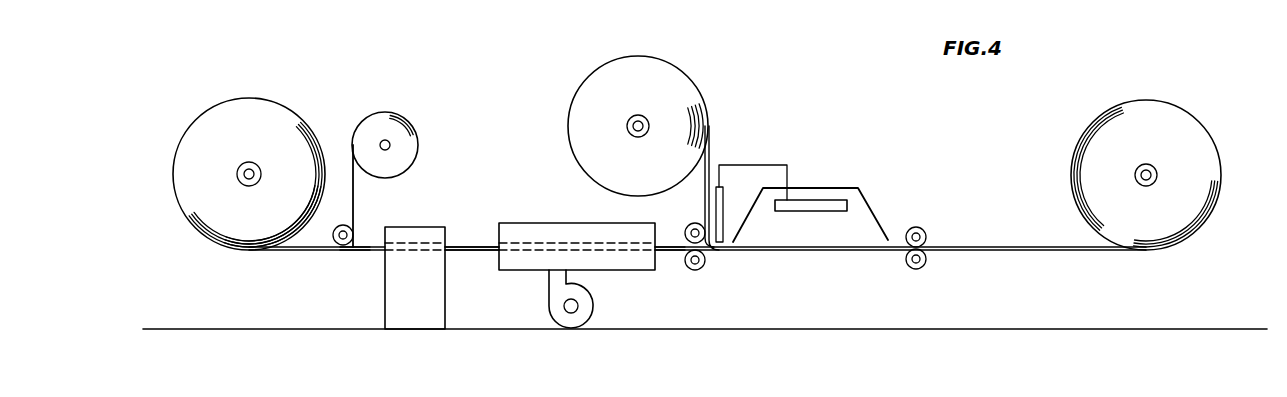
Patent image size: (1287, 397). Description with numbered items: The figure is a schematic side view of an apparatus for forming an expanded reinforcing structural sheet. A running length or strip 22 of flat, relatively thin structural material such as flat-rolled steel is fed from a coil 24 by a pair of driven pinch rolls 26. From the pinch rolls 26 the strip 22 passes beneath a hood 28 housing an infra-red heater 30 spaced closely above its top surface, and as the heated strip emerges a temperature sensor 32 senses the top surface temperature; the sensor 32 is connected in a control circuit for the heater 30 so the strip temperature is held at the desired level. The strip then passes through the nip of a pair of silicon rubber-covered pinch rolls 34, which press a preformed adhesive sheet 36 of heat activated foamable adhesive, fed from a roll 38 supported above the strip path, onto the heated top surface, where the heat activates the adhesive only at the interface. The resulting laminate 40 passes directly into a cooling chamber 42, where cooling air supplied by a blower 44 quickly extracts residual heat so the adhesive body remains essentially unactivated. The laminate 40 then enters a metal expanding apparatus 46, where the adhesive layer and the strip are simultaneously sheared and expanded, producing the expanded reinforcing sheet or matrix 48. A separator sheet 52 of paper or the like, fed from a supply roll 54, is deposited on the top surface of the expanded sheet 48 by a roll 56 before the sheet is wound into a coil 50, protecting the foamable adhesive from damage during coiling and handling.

The strip 22 is at (1034, 252).
The coil 24 is at (1217, 179).
The driven pinch rolls 26 is at (926, 258).
The hood 28 is at (873, 207).
The infra-red heater 30 is at (820, 197).
The temperature sensor 32 is at (725, 195).
The pinch rolls 34 is at (692, 224).
The adhesive sheet 36 is at (708, 150).
The roll 38 is at (678, 85).
The laminate 40 is at (462, 253).
The cooling chamber 42 is at (582, 223).
The blower 44 is at (588, 304).
The metal expanding apparatus 46 is at (423, 227).
The expanded reinforcing sheet 48 is at (353, 252).
The coil 50 is at (195, 142).
The separator sheet 52 is at (353, 197).
The supply roll 54 is at (403, 120).
The roll 56 is at (328, 240).